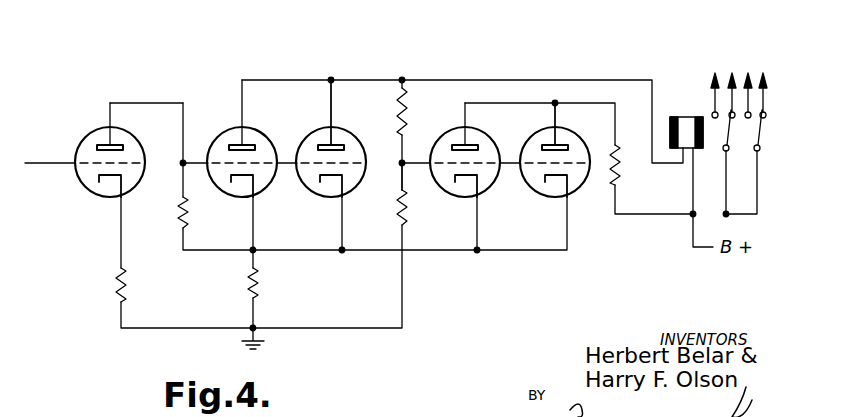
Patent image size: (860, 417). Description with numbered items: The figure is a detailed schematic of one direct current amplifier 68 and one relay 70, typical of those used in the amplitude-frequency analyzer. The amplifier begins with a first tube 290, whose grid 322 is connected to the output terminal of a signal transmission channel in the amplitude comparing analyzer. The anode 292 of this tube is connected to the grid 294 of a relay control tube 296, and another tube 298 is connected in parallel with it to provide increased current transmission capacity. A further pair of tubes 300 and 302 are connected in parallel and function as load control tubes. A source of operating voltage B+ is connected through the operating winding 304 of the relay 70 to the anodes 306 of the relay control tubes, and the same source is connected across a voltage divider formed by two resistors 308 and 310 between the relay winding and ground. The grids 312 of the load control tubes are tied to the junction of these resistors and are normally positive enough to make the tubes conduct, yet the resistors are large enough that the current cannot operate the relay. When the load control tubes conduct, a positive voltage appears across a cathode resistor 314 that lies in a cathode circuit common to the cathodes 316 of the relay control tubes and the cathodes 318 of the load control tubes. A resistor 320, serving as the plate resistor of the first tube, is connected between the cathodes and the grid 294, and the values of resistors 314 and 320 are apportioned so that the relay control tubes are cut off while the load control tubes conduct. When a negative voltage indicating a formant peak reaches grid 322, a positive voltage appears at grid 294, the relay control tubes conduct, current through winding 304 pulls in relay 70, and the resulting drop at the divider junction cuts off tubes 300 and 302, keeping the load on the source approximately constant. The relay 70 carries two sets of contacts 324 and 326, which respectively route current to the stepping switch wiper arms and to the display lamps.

The direct current amplifier 68 is at (172, 97).
The first tube 290 is at (82, 137).
The anode 292 is at (120, 146).
The grid 322 is at (82, 180).
The relay control tube 296 is at (244, 138).
The anodes 306 is at (255, 147).
The cathodes 316 is at (252, 178).
The tube 298 is at (343, 128).
The load control tube 300 is at (447, 132).
The load control tube 302 is at (537, 132).
The cathodes 318 is at (464, 196).
The grid 294 is at (216, 177).
The resistor 320 is at (180, 230).
The cathode resistor 314 is at (261, 283).
The resistor 308 is at (406, 96).
The resistor 310 is at (398, 216).
The grids 312 is at (394, 222).
The relay 70 is at (700, 73).
The operating winding 304 is at (680, 117).
The contacts 324 is at (722, 67).
The contacts 326 is at (757, 70).